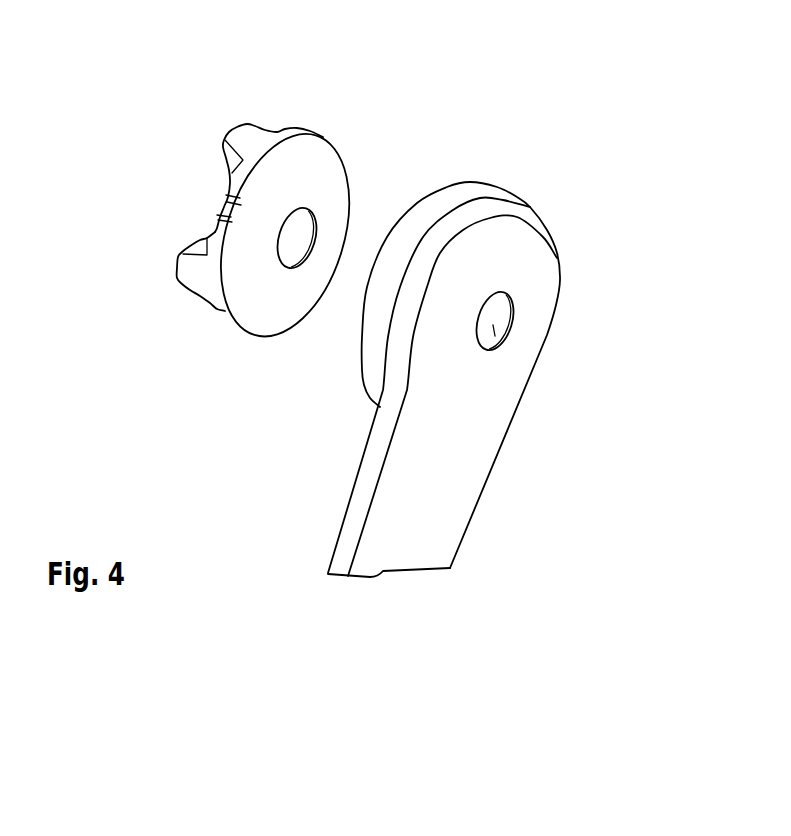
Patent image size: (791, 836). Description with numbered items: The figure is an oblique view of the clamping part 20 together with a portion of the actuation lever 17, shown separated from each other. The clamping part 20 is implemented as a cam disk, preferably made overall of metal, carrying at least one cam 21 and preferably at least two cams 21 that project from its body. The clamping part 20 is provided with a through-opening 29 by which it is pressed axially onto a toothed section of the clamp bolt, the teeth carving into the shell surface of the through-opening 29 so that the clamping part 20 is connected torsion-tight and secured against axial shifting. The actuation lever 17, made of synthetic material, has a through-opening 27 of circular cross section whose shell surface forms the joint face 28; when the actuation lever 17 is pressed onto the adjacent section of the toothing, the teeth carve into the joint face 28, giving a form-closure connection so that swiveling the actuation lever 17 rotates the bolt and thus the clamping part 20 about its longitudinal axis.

The actuation lever 17 is at (496, 379).
The clamping part 20 is at (272, 182).
The cam 21 is at (238, 140).
The through-opening 27 is at (497, 308).
The joint face 28 is at (493, 325).
The through-opening 29 is at (298, 240).